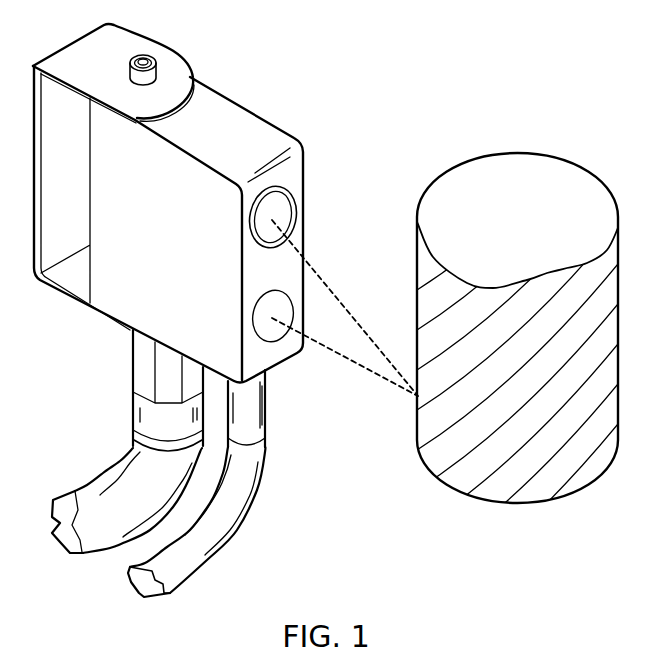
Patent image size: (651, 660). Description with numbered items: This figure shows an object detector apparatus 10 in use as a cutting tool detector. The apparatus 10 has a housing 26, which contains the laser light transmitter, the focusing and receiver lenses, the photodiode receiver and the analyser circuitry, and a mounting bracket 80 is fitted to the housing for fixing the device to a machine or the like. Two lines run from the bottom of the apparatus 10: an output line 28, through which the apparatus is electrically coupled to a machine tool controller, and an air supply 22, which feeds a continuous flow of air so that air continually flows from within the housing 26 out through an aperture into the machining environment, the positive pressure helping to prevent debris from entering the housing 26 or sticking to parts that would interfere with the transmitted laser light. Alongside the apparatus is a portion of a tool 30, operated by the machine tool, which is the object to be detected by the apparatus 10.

The object detector apparatus 10 is at (262, 98).
The mounting bracket 80 is at (83, 63).
The housing 26 is at (138, 262).
The output line 28 is at (92, 500).
The air supply 22 is at (137, 587).
The tool 30 is at (503, 230).